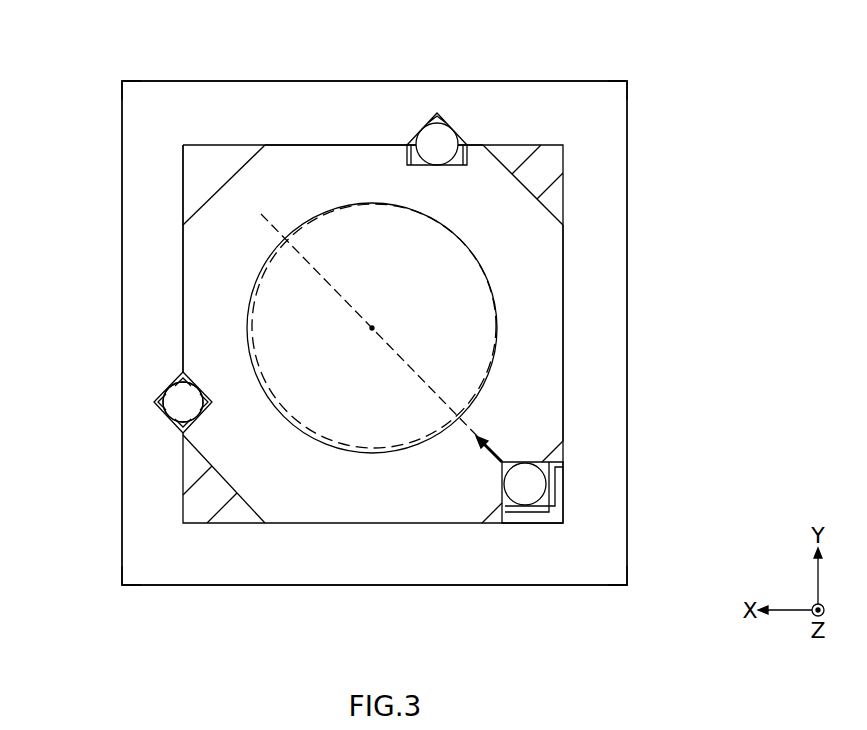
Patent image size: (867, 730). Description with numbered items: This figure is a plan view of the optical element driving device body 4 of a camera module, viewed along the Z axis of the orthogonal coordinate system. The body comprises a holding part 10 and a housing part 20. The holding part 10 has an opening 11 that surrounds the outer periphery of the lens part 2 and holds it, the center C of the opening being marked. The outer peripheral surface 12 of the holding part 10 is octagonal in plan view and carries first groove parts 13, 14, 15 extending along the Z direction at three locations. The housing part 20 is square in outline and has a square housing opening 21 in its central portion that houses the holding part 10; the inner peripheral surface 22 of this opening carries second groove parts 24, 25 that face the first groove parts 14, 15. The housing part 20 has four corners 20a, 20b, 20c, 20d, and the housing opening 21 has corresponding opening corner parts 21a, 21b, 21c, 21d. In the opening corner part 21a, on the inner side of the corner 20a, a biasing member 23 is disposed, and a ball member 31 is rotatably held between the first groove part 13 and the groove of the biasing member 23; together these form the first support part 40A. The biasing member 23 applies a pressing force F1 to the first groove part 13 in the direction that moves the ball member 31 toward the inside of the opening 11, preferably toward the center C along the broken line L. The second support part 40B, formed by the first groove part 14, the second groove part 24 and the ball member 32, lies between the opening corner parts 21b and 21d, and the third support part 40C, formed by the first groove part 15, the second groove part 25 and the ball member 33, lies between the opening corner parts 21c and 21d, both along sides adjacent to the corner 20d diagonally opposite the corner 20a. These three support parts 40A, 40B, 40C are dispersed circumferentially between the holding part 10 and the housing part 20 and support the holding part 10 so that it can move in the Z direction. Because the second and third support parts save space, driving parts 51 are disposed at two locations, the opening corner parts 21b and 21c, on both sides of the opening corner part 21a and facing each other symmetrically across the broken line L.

The lens part 2 is at (487, 280).
The optical element driving device body 4 is at (635, 108).
The holding part 10 is at (222, 320).
The opening 11 is at (365, 416).
The outer peripheral surface 12 is at (183, 257).
The first groove part 13 is at (553, 468).
The first groove part 14 is at (433, 134).
The first groove part 15 is at (168, 430).
The housing part 20 is at (150, 160).
The corner 20a is at (627, 585).
The corner 20b is at (627, 81).
The corner 20c is at (122, 585).
The corner 20d is at (122, 81).
The housing opening 21 is at (546, 350).
The opening corner part 21a is at (537, 518).
The opening corner part 21b is at (553, 200).
The opening corner part 21c is at (233, 513).
The opening corner part 21d is at (207, 163).
The inner peripheral surface 22 is at (561, 372).
The biasing member 23 is at (556, 512).
The second groove part 24 is at (455, 118).
The second groove part 25 is at (162, 390).
The ball member 31 is at (553, 485).
The ball member 32 is at (412, 140).
The ball member 33 is at (180, 412).
The first support part 40A is at (589, 546).
The second support part 40B is at (462, 86).
The third support part 40C is at (116, 425).
The driving part 51 is at (552, 172).
The center C is at (376, 311).
The broken line L is at (370, 314).
The pressing force F1 is at (493, 437).